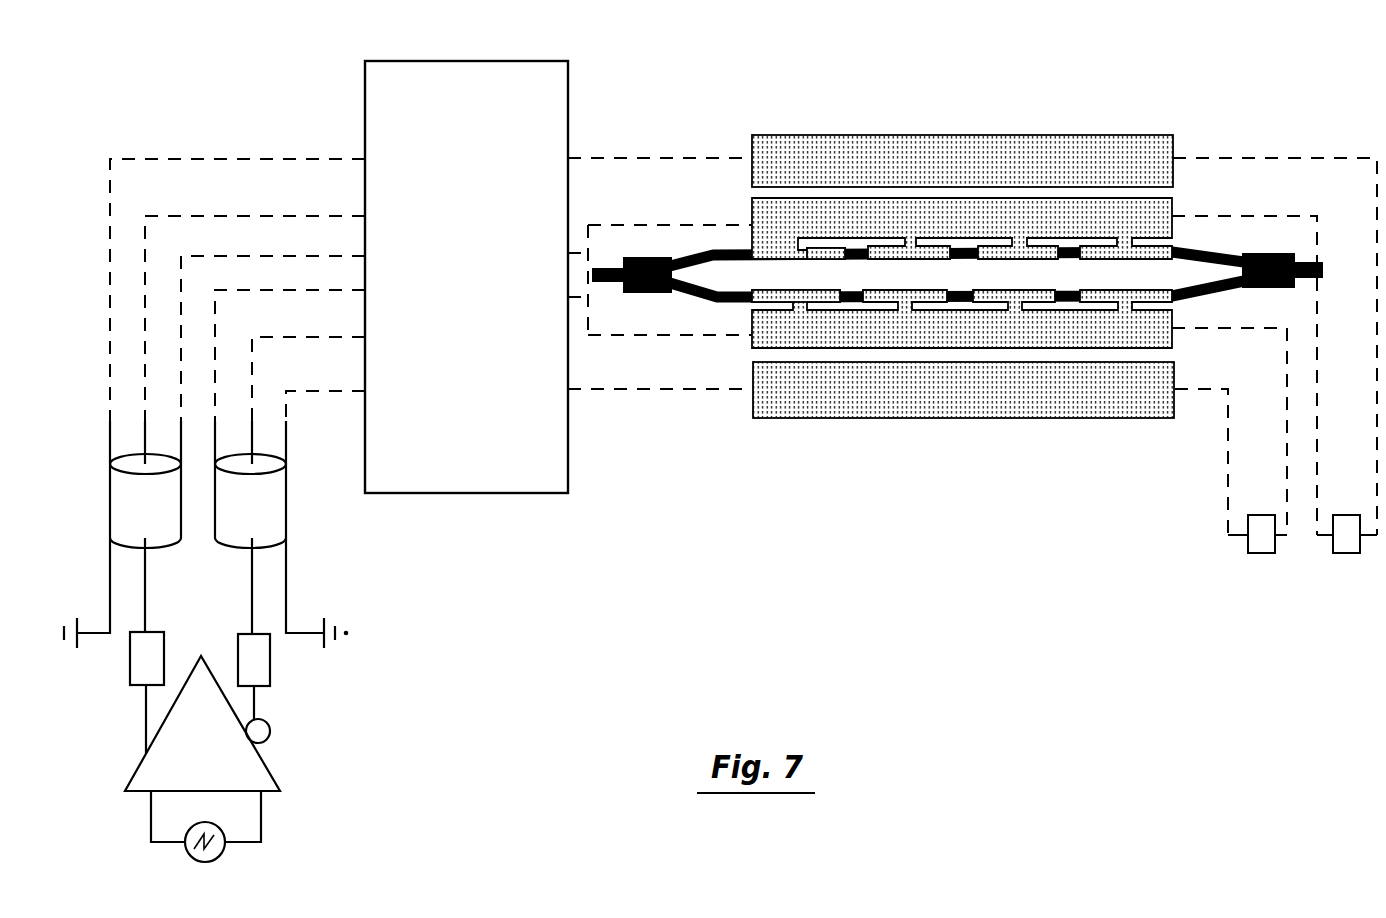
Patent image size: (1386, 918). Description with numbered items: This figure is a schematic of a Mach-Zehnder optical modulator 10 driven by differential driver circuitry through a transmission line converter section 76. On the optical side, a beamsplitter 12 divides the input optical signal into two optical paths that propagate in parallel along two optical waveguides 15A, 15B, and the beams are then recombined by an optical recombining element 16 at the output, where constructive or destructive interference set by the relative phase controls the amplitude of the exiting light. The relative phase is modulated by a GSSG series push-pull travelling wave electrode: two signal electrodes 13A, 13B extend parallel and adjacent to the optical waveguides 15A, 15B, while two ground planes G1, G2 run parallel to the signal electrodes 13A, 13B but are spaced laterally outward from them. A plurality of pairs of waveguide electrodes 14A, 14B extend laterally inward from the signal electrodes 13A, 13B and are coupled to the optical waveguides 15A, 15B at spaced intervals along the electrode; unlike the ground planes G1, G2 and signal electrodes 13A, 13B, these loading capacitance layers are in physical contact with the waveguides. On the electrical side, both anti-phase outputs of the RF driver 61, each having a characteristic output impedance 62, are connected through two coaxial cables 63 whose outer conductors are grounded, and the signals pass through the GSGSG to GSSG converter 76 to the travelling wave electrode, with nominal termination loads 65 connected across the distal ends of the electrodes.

The optical modulator 10 is at (949, 99).
The beamsplitter 12 is at (638, 257).
The signal electrode 13A is at (1165, 209).
The signal electrode 13B is at (1173, 343).
The waveguide electrode 14A is at (794, 259).
The waveguide electrode 14B is at (814, 292).
The optical waveguide 15A is at (732, 250).
The optical waveguide 15B is at (727, 303).
The optical recombining element 16 is at (1255, 253).
The ground plane G1 is at (807, 134).
The ground plane G2 is at (770, 407).
The RF driver 61 is at (194, 767).
The characteristic output impedance 62 is at (161, 649).
The coaxial cables 63 is at (166, 498).
The termination loads 65 is at (1245, 568).
The transmission line converter section 76 is at (447, 412).